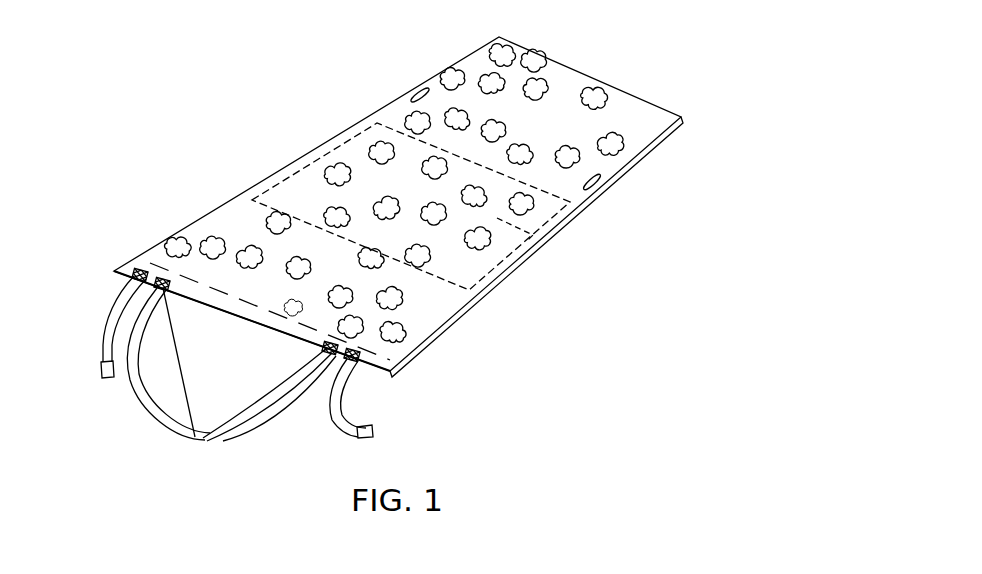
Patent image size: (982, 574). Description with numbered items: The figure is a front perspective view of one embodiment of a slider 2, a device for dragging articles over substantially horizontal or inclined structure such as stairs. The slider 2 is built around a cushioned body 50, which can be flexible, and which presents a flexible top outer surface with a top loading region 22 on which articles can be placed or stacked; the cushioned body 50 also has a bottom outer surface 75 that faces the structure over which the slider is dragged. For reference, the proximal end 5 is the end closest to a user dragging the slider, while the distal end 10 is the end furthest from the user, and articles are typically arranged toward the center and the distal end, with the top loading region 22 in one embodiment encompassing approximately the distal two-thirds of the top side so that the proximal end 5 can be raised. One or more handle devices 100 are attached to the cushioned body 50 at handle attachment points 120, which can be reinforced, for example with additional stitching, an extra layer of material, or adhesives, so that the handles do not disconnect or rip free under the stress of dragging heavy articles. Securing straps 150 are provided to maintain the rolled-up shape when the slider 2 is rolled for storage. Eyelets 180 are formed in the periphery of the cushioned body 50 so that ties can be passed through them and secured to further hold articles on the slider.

The slider 2 is at (366, 252).
The proximal end 5 is at (221, 315).
The distal end 10 is at (398, 198).
The top loading region 22 is at (545, 244).
The cushioned body 50 is at (536, 131).
The bottom outer surface 75 is at (497, 284).
The handle device 100 is at (243, 379).
The handle attachment point 120 is at (207, 432).
The securing strap 150 is at (110, 322).
The eyelet 180 is at (410, 92).